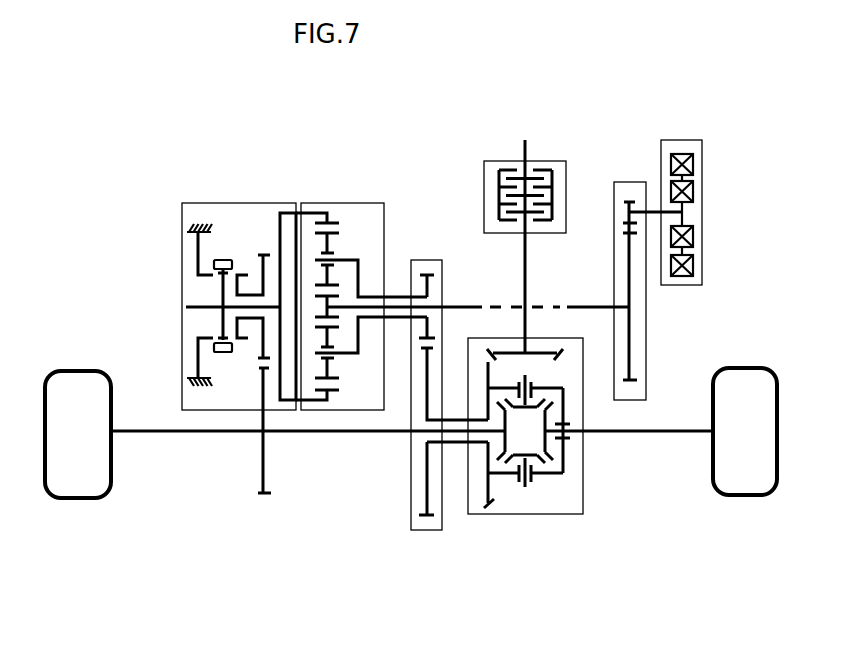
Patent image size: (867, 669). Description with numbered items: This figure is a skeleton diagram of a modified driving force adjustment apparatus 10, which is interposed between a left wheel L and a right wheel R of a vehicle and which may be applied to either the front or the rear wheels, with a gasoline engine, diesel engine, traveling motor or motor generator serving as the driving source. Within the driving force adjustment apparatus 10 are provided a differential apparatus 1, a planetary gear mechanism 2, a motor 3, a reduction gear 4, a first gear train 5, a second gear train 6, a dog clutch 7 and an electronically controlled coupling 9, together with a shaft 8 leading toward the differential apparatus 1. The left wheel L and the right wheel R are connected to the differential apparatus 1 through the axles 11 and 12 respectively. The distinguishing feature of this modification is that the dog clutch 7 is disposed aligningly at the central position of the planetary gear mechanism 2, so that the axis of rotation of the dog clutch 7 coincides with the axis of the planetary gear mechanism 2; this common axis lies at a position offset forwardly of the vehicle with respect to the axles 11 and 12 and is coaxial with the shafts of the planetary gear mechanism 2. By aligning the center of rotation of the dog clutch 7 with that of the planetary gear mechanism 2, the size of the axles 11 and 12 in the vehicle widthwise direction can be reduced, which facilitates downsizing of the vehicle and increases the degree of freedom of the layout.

The differential apparatus 1 is at (584, 482).
The planetary gear mechanism 2 is at (347, 202).
The motor 3 is at (682, 139).
The reduction gear 4 is at (630, 181).
The first gear train 5 is at (262, 511).
The second gear train 6 is at (425, 259).
The dog clutch 7 is at (234, 203).
The input shaft 8 is at (527, 266).
The electronically controlled coupling 9 is at (553, 160).
The driving force adjustment apparatus 10 is at (138, 167).
The axle 11 is at (136, 431).
The axle 12 is at (677, 430).
The left wheel L is at (77, 371).
The right wheel R is at (745, 368).